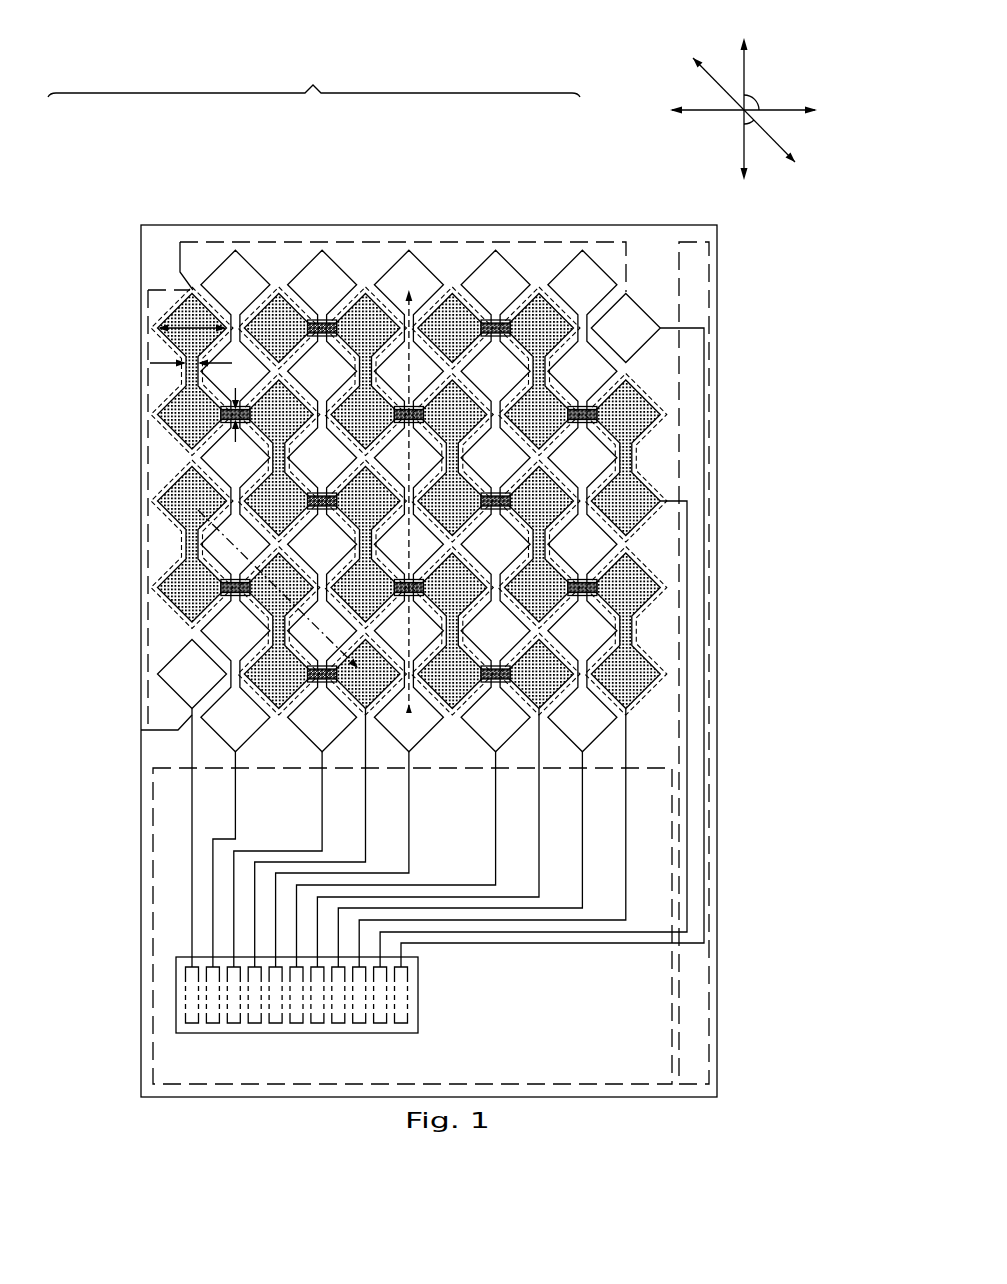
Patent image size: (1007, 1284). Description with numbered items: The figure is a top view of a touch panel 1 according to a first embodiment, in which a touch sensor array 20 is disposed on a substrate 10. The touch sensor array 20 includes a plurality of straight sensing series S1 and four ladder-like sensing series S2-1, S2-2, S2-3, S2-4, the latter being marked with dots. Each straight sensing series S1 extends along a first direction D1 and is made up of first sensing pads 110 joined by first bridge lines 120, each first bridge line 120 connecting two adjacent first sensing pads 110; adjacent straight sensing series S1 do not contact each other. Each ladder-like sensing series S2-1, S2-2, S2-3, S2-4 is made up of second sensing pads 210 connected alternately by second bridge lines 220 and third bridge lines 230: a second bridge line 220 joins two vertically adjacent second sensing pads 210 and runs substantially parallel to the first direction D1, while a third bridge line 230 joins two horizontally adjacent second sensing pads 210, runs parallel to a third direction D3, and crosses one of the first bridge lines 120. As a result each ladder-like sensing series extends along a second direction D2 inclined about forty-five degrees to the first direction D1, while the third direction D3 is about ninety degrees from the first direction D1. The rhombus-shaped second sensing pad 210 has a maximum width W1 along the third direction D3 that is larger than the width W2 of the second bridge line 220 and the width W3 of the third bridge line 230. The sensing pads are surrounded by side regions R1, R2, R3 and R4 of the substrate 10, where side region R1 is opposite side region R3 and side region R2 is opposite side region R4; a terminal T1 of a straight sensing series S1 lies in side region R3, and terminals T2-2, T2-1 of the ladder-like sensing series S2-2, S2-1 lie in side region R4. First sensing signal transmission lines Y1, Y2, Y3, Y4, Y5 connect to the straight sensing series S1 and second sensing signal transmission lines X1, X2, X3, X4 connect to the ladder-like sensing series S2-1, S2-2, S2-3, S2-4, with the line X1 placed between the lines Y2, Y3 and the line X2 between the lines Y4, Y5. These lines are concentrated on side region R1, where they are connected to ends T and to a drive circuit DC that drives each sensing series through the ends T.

The touch panel 1 is at (68, 25).
The substrate 10 is at (652, 226).
The touch sensor array 20 is at (314, 76).
The first sensing pad 110 is at (398, 290).
The first bridge line 120 is at (330, 323).
The second sensing pad 210 is at (185, 512).
The second bridge line 220 is at (190, 546).
The third bridge line 230 is at (197, 628).
The straight sensing series S1 is at (236, 250).
The ladder-like sensing series S2-1 is at (228, 402).
The ladder-like sensing series S2-2 is at (326, 402).
The ladder-like sensing series S2-3 is at (279, 293).
The ladder-like sensing series S2-4 is at (452, 293).
The terminal of the straight sensing series T1 is at (240, 283).
The terminal of the ladder-like sensing series T2-1 is at (180, 485).
The terminal of the ladder-like sensing series T2-2 is at (172, 352).
The second sensing signal transmission line X1 is at (365, 818).
The second sensing signal transmission line X2 is at (537, 818).
The second sensing signal transmission line X3 is at (627, 818).
The second sensing signal transmission line X4 is at (687, 503).
The first sensing signal transmission line Y1 is at (235, 794).
The first sensing signal transmission line Y2 is at (318, 794).
The first sensing signal transmission line Y3 is at (408, 794).
The first sensing signal transmission line Y4 is at (493, 794).
The first sensing signal transmission line Y5 is at (581, 794).
The side region R1 is at (146, 823).
The side region R2 is at (714, 793).
The side region R3 is at (617, 236).
The side region R4 is at (146, 728).
The drive circuit DC is at (176, 994).
The end T is at (380, 1024).
The first direction D1 is at (578, 391).
The second direction D2 is at (510, 379).
The third direction D3 is at (758, 112).
The maximum width W1 is at (192, 318).
The width of the second bridge line W2 is at (191, 375).
The width of the third bridge line W3 is at (239, 434).